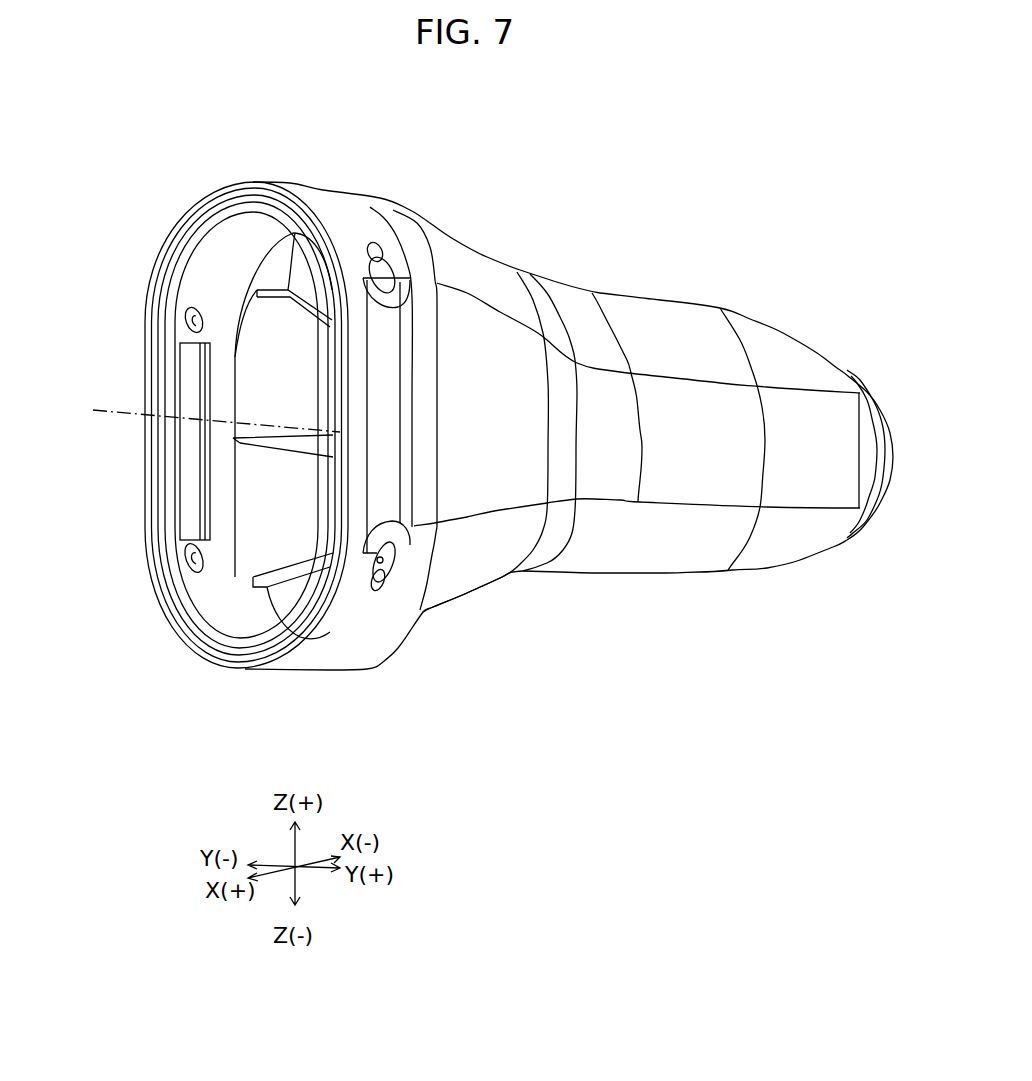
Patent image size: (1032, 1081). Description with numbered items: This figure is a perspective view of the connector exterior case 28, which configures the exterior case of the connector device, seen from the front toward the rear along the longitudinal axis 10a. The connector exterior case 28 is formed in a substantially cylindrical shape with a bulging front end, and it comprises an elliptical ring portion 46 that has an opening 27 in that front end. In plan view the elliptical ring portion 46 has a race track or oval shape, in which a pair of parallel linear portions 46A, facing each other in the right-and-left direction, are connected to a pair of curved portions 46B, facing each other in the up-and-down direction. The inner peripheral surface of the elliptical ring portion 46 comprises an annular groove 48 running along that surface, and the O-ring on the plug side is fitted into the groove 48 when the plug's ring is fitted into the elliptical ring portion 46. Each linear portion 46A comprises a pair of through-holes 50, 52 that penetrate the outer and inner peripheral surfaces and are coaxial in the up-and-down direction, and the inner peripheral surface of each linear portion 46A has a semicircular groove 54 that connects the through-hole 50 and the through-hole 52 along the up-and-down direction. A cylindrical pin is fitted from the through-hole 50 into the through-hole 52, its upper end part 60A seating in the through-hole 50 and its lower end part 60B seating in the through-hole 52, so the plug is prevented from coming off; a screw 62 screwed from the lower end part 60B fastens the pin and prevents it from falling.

The curved portion 46B is at (250, 182).
The annular groove 48 is at (257, 240).
The elliptical ring portion 46 is at (354, 183).
The through-hole 50 is at (190, 320).
The upper end part 60A is at (383, 275).
The connector exterior case 28 is at (637, 233).
The opening 27 is at (160, 385).
The longitudinal axis 10a is at (194, 416).
The linear portion 46A is at (142, 445).
The semicircular groove 54 is at (190, 480).
The through-hole 52 is at (190, 555).
The screw 62 is at (390, 565).
The lower end part 60B is at (395, 557).